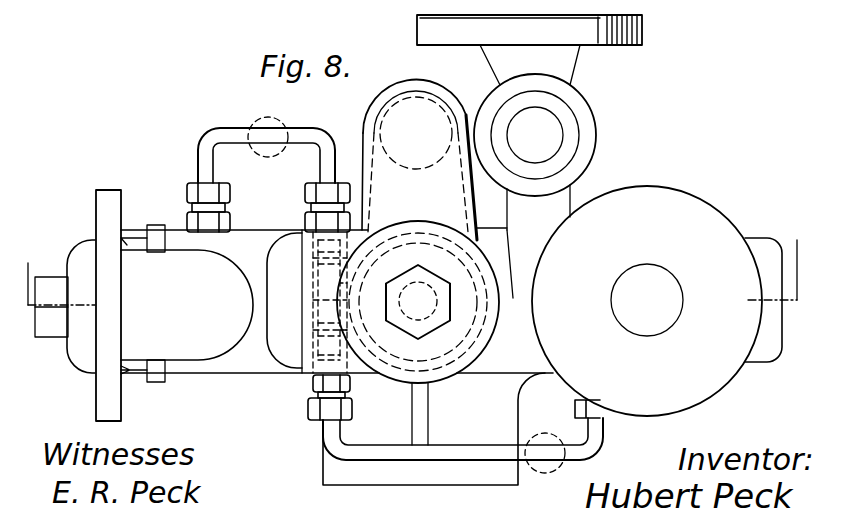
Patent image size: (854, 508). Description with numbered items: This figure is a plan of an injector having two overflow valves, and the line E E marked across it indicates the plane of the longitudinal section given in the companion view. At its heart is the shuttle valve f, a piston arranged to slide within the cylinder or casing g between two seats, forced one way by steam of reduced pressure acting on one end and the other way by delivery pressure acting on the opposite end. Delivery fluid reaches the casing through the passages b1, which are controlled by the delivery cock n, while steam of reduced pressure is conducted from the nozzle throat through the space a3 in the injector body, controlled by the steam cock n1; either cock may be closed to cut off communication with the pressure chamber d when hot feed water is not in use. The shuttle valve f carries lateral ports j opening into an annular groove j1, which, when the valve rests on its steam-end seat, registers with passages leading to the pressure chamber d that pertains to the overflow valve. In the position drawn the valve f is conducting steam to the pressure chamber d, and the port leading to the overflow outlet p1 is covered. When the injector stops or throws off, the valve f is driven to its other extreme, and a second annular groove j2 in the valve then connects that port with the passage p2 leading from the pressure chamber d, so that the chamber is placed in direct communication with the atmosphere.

The cut off cock n is at (268, 119).
The passages b1 is at (316, 137).
The passage p2 is at (307, 260).
The annular groove j2 is at (317, 300).
The cylinder or casing g is at (313, 286).
The shuttle valve f is at (320, 333).
The lateral ports j is at (347, 263).
The overflow outlet p1 is at (349, 284).
The annular groove j1 is at (345, 330).
The pressure chamber d is at (418, 297).
The section line E is at (412, 259).
The cut off cock n1 is at (545, 469).
The space a3 is at (587, 447).